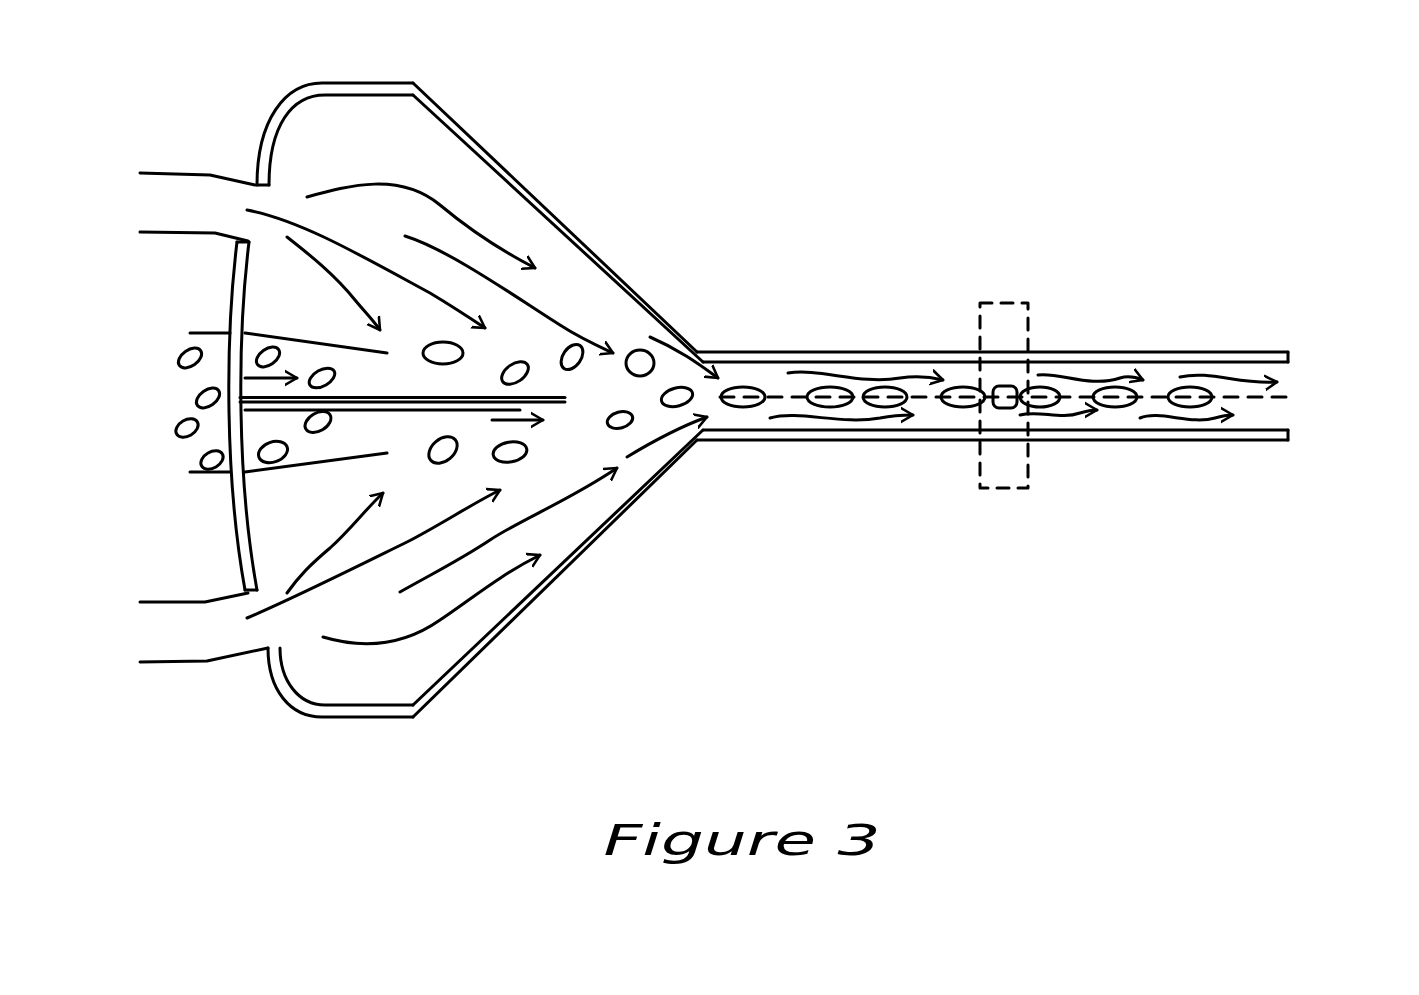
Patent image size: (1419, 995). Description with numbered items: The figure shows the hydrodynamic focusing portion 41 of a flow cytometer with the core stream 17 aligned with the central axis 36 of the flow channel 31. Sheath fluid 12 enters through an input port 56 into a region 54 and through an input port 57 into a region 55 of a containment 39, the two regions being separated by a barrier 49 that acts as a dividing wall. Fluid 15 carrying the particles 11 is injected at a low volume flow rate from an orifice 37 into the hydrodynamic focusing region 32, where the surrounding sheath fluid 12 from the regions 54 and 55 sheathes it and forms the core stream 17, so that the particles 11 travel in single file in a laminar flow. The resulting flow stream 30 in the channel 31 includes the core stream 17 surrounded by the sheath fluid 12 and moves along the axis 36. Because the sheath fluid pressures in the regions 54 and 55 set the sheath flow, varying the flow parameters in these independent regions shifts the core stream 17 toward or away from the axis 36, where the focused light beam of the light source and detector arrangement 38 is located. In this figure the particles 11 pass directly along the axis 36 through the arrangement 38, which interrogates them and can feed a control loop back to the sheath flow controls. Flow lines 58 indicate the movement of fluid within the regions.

The particles 11 is at (560, 357).
The sheath fluid 12 is at (390, 233).
The fluid with particles 15 is at (390, 393).
The core stream 17 is at (778, 400).
The flow stream 30 is at (1008, 341).
The flow channel 31 is at (1076, 352).
The hydrodynamic focusing region 32 is at (602, 455).
The axis 36 is at (1276, 400).
The orifice 37 is at (312, 468).
The light source and detector arrangement 38 is at (990, 503).
The containment 39 is at (555, 573).
The portion 41 is at (772, 195).
The barrier 49 is at (408, 410).
The region 54 is at (600, 317).
The region 55 is at (572, 550).
The input port 56 is at (225, 190).
The input port 57 is at (240, 643).
The fluid stream 58 is at (405, 183).